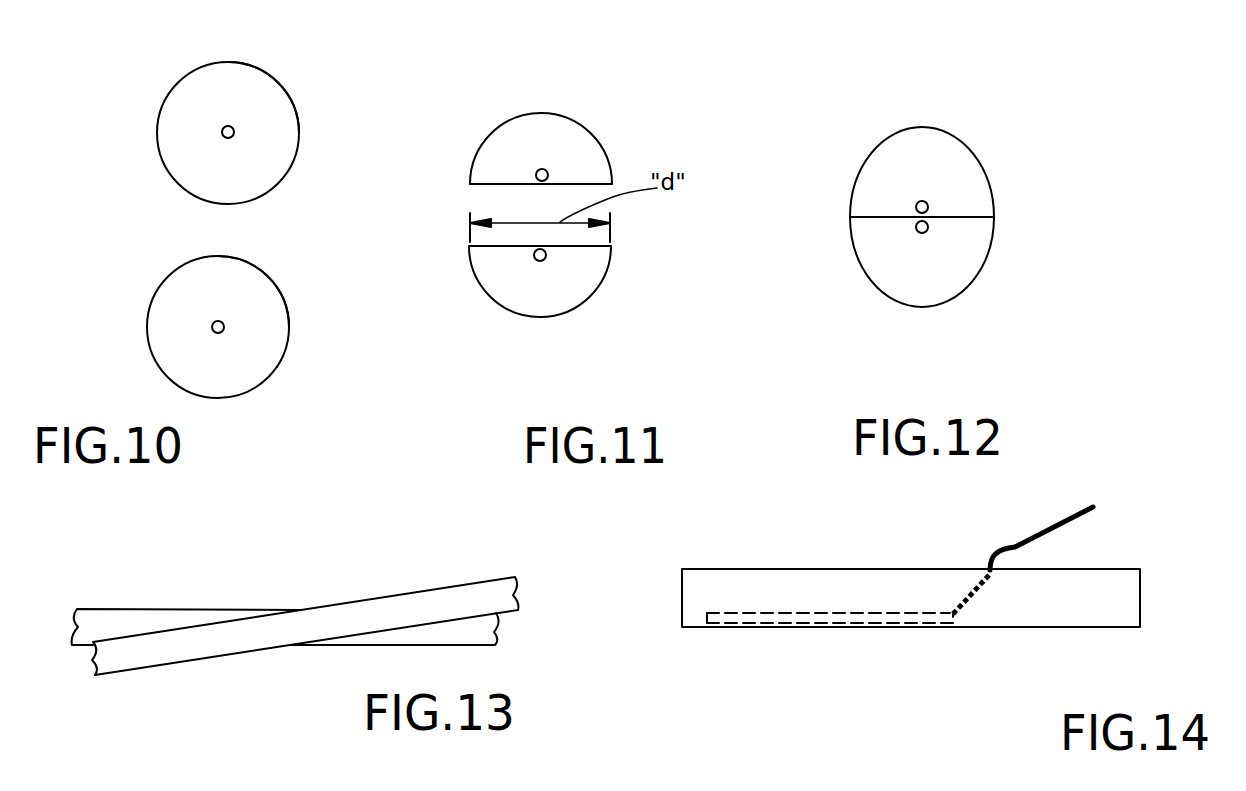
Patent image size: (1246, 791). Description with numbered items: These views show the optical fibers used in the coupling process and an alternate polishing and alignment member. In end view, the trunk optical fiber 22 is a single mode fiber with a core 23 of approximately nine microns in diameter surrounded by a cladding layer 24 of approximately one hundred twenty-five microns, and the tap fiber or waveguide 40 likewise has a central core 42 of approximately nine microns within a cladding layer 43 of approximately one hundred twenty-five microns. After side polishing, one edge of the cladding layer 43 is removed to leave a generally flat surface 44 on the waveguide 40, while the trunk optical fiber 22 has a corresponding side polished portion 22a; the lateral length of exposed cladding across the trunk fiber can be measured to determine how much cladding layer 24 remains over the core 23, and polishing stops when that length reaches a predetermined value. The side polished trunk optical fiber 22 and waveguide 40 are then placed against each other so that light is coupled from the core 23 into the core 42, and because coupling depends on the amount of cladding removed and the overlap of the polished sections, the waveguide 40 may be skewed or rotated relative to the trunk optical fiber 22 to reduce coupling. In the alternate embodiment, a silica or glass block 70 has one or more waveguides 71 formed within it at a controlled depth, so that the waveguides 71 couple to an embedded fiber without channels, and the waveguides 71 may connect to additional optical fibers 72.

In FIG. 10, the trunk optical fiber 22 is at (153, 306).
In FIG. 11, the trunk optical fiber 22 is at (560, 308).
In FIG. 12, the trunk optical fiber 22 is at (964, 272).
In FIG. 13, the trunk optical fiber 22 is at (153, 609).
In FIG. 11, the side polished portion 22a is at (486, 245).
In FIG. 10, the core 23 is at (226, 327).
In FIG. 11, the core 23 is at (547, 259).
In FIG. 12, the core 23 is at (922, 234).
In FIG. 10, the cladding layer 24 is at (248, 263).
In FIG. 10, the waveguide 40 is at (160, 118).
In FIG. 11, the waveguide 40 is at (553, 111).
In FIG. 12, the waveguide 40 is at (981, 193).
In FIG. 13, the waveguide 40 is at (182, 653).
In FIG. 10, the central core 42 is at (228, 126).
In FIG. 11, the central core 42 is at (548, 171).
In FIG. 12, the central core 42 is at (918, 202).
In FIG. 10, the cladding layer 43 is at (275, 82).
In FIG. 11, the flat surface 44 is at (493, 185).
In FIG. 14, the block 70 is at (1127, 607).
In FIG. 14, the waveguides 71 is at (818, 617).
In FIG. 14, the additional optical fibers 72 is at (1042, 530).